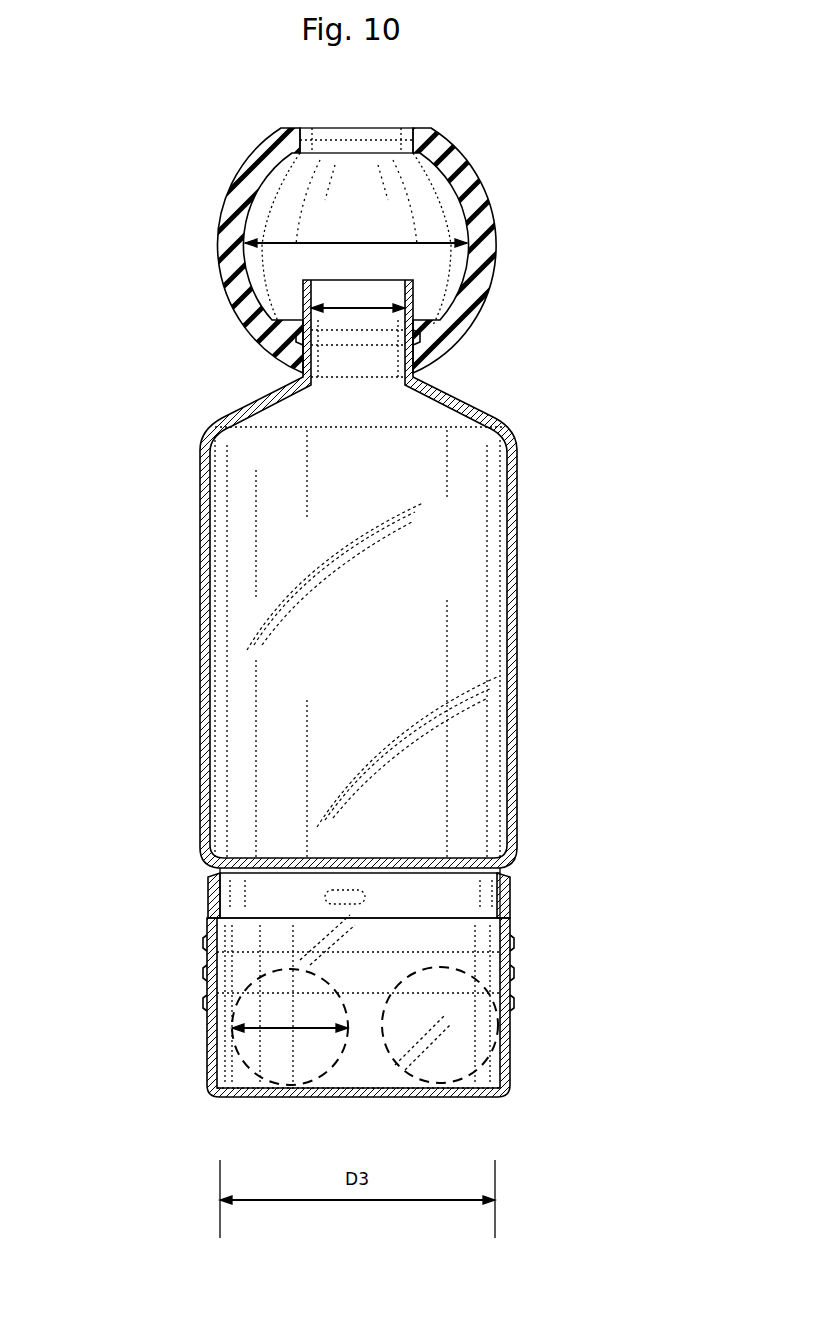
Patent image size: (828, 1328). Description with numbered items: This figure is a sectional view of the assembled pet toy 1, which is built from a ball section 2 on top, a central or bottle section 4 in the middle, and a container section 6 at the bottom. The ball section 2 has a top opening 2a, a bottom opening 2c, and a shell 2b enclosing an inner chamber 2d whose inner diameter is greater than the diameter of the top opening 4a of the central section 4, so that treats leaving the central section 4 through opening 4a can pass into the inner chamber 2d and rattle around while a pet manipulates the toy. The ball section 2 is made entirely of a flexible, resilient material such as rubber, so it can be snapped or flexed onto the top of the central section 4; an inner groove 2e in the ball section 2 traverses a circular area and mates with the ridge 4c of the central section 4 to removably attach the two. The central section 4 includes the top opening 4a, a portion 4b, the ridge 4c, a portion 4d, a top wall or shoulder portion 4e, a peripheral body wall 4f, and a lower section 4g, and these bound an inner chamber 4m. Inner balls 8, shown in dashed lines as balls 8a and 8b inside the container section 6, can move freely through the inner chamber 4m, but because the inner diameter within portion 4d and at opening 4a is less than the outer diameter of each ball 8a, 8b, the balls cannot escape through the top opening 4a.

The pet toy 1 is at (522, 147).
The ball section 2 is at (195, 222).
The top opening 2a is at (355, 145).
The shell 2b is at (487, 250).
The bottom opening 2c is at (352, 377).
The inner chamber 2d is at (395, 185).
The inner groove 2e is at (415, 337).
The central section 4 is at (182, 645).
The top opening 4a is at (375, 280).
The portion 4b is at (335, 287).
The ridge 4c is at (347, 343).
The portion 4d is at (327, 365).
The top wall or shoulder portion 4e is at (250, 395).
The peripheral wall 4f is at (518, 582).
The inner chamber 4m is at (390, 632).
The section 4g is at (507, 880).
The container section 6 is at (187, 998).
The inner balls 8 is at (318, 1060).
The ball 8a is at (268, 1063).
The ball 8b is at (483, 1025).